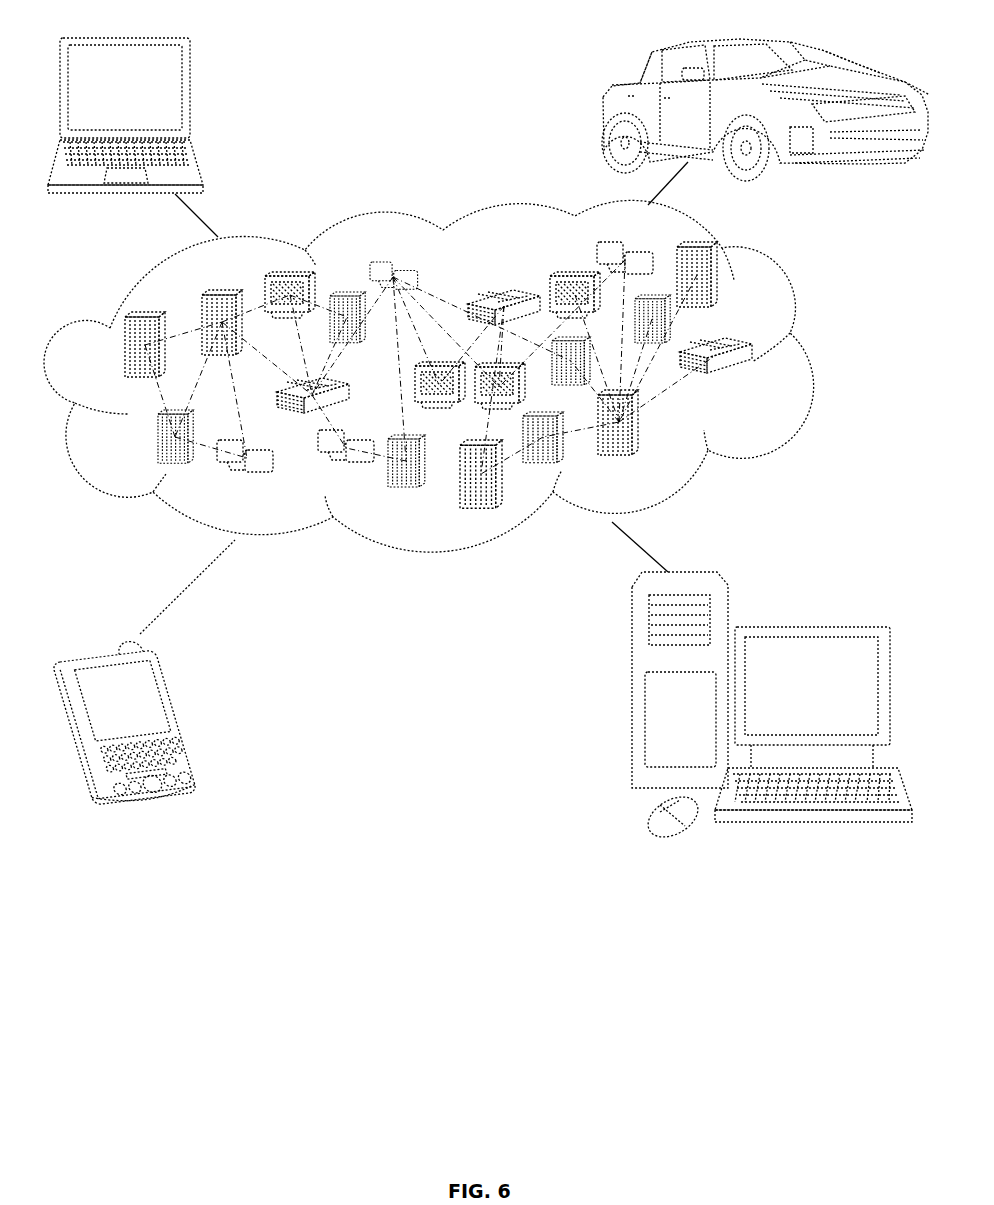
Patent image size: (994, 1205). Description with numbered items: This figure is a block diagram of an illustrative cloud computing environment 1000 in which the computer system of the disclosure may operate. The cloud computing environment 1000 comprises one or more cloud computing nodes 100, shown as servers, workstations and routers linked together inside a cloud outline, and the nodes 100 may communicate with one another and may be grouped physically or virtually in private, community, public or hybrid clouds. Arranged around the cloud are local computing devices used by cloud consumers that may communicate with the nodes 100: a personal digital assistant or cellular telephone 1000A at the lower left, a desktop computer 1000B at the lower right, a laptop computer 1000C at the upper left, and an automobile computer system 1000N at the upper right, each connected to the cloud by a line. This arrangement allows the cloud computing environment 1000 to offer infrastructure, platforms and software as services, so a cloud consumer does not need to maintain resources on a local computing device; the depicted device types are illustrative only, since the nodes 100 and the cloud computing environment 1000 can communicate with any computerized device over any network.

The laptop computer 1000C is at (192, 98).
The automobile computer system 1000N is at (600, 110).
The personal digital assistant (PDA) or cellular telephone 1000A is at (178, 718).
The desktop computer 1000B is at (808, 625).
The cloud computing environment 1000 is at (795, 352).
The cloud computing nodes 100 is at (770, 382).